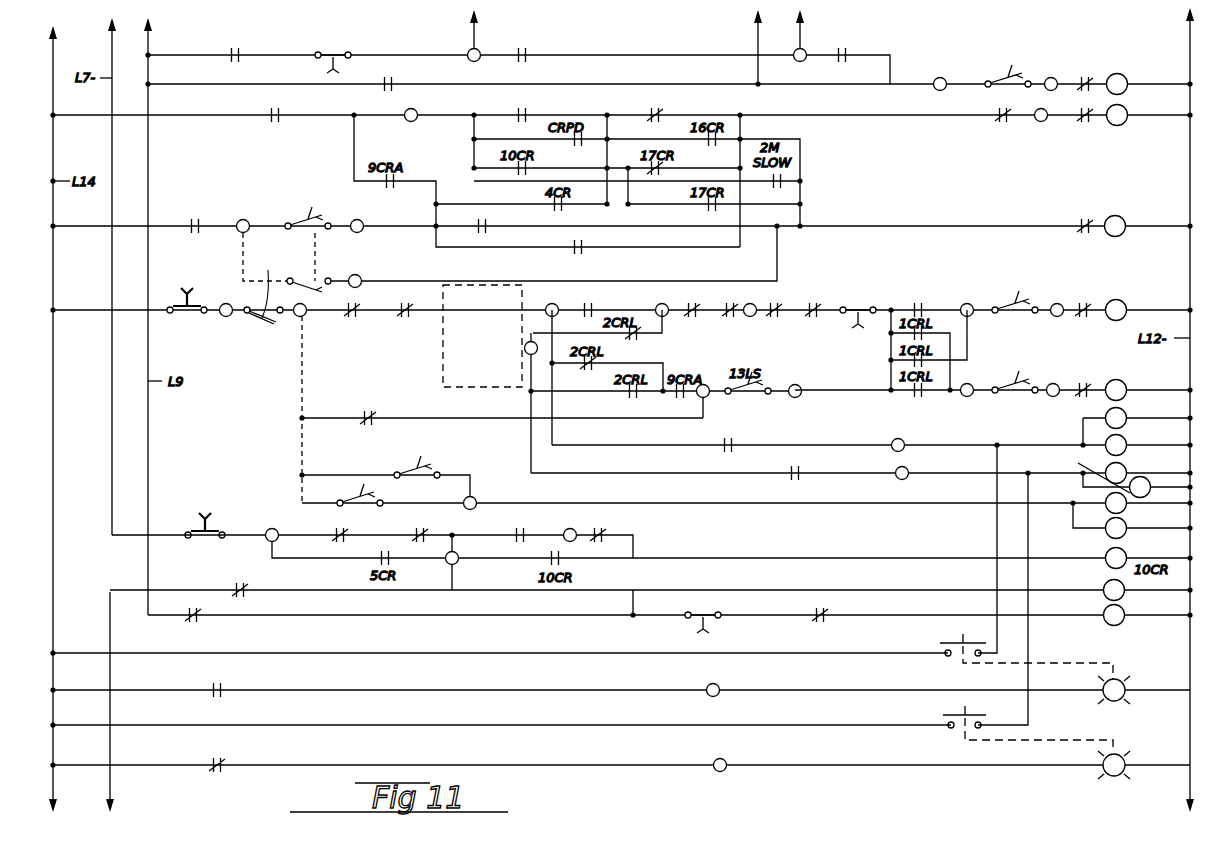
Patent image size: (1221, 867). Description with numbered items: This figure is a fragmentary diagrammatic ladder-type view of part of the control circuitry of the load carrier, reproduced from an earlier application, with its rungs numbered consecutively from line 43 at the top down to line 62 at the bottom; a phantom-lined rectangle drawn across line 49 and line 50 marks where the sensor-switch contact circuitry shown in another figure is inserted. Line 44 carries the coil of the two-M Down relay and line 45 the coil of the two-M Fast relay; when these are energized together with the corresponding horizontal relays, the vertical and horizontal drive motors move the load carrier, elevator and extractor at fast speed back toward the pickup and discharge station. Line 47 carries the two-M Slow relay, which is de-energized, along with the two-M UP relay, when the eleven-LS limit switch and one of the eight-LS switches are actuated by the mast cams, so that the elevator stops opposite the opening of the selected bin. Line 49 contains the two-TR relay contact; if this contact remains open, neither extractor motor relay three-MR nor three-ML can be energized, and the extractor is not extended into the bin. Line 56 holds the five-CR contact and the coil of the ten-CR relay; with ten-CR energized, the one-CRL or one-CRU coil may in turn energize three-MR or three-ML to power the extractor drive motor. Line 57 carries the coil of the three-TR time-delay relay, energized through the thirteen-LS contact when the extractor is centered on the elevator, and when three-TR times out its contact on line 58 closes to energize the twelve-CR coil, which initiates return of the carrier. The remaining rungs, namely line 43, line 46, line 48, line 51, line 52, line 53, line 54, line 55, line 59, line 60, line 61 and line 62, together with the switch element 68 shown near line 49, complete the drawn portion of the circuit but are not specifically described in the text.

The control circuit line 43 is at (45, 61).
The circuit line 44 is at (45, 90).
The circuit line 45 is at (45, 121).
The control circuit line 46 is at (45, 187).
The circuit line 47 is at (45, 232).
The control circuit line 48 is at (45, 287).
The circuit line 49 is at (45, 316).
The circuit line 50 is at (45, 392).
The control circuit line 51 is at (45, 425).
The control circuit line 52 is at (45, 452).
The control circuit line 53 is at (45, 482).
The phantom lined rectangle 54 is at (45, 510).
The control circuit line 55 is at (45, 542).
The circuit line 56 is at (442, 361).
The circuit line 57 is at (45, 597).
The circuit line 58 is at (45, 623).
The second command switch bank 59 is at (45, 660).
The control circuit line 60 is at (45, 697).
The control circuit line 61 is at (45, 732).
The actuator 62 is at (45, 772).
The off-on selector switch 68 is at (186, 292).